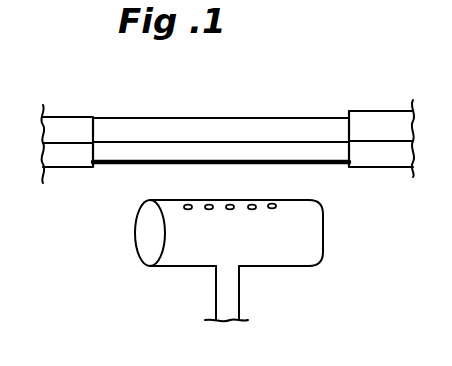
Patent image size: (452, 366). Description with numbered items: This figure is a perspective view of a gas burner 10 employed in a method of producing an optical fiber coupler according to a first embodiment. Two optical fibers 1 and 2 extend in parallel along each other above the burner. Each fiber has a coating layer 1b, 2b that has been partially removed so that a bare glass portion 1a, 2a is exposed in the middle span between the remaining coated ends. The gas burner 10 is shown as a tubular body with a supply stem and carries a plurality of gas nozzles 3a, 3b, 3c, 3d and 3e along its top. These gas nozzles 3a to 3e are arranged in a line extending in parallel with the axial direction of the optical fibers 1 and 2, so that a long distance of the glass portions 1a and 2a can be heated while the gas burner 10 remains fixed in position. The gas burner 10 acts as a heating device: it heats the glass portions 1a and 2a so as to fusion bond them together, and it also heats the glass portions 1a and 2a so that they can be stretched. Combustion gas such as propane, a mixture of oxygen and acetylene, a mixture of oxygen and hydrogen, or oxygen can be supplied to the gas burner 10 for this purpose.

The optical fiber 1 is at (402, 103).
The optical fiber 2 is at (413, 170).
The glass portion 1a is at (329, 129).
The coating layer 1b is at (57, 116).
The glass portion 2a is at (323, 152).
The coating layer 2b is at (63, 170).
The gas nozzle 3a is at (185, 205).
The gas nozzle 3b is at (207, 211).
The gas nozzle 3c is at (230, 211).
The gas nozzle 3d is at (252, 211).
The gas nozzle 3e is at (275, 206).
The gas burner 10 is at (303, 242).